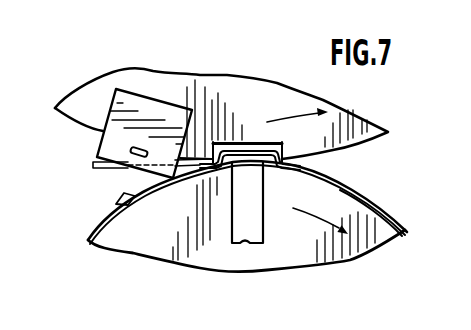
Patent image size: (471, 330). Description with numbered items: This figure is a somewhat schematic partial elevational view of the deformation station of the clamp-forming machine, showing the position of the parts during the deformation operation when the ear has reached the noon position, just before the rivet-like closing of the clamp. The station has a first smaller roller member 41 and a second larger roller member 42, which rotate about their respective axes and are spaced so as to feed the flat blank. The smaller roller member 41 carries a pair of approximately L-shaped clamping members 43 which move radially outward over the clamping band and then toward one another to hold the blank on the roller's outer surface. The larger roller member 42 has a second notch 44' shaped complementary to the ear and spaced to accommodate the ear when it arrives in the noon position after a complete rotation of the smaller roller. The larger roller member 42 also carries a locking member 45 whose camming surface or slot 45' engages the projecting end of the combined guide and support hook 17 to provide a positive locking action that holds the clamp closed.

The guide hook 17 is at (118, 196).
The first smaller roller member 41 is at (132, 238).
The second larger roller member 42 is at (380, 122).
The clamping members 43 is at (243, 210).
The second notch 44' is at (196, 126).
The locking member 45 is at (117, 128).
The slot 45' is at (158, 117).